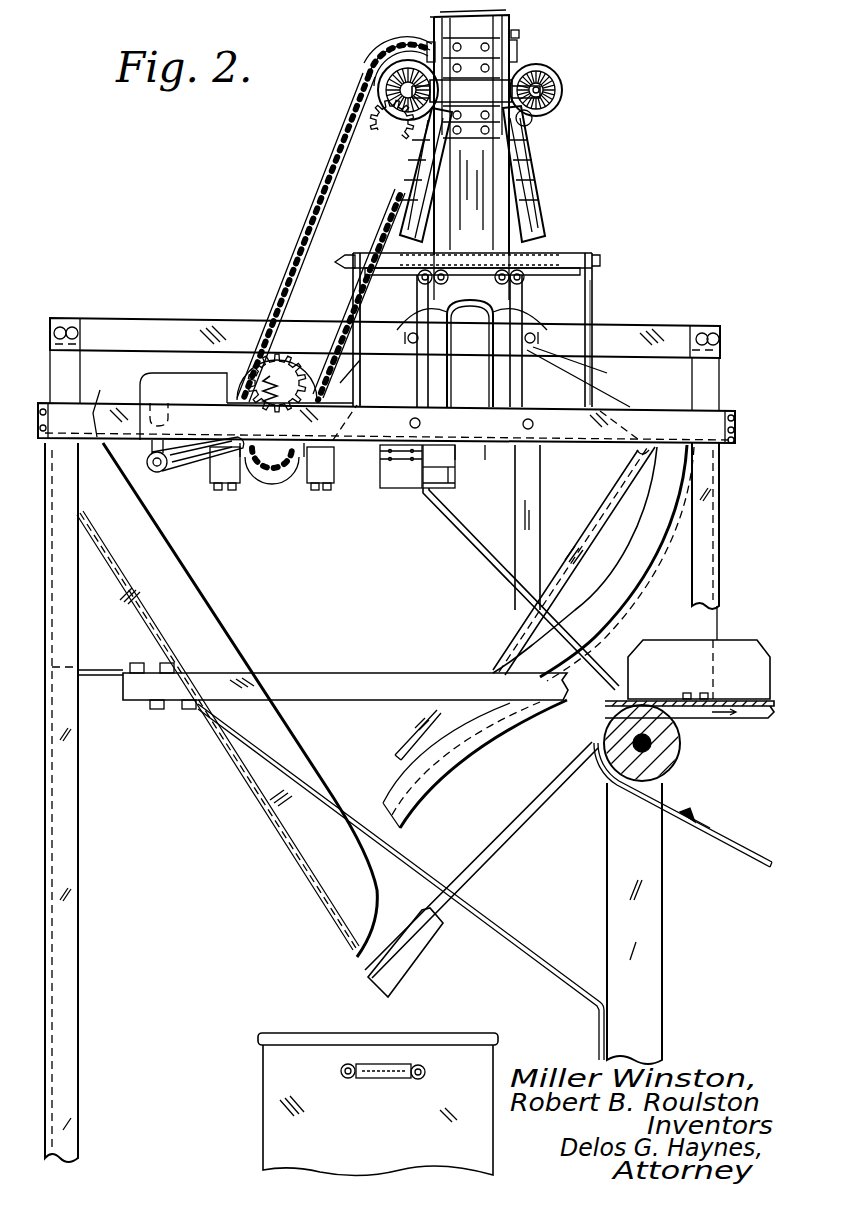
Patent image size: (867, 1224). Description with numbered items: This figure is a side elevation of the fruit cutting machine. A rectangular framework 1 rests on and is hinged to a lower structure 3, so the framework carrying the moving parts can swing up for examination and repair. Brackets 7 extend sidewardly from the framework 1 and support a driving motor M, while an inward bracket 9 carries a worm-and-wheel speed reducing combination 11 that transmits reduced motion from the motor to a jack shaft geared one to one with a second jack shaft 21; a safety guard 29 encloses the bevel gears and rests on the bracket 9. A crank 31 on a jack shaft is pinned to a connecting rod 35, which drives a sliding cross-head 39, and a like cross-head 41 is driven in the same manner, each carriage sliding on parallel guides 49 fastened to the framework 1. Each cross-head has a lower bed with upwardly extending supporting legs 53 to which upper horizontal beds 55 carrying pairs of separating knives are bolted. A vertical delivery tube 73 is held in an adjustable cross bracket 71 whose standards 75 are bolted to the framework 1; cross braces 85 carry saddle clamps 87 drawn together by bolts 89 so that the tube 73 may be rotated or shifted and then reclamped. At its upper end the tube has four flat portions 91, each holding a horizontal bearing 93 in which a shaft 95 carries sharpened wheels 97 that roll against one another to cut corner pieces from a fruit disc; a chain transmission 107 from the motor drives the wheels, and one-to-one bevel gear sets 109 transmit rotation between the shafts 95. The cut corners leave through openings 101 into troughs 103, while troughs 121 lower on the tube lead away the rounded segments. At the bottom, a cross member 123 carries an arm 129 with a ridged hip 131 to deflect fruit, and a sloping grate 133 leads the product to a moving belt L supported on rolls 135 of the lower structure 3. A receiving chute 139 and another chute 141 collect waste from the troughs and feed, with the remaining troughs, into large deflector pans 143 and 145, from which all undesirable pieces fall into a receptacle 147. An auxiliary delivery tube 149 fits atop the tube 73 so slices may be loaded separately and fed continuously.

The rectangular framework 1 is at (75, 405).
The lower structure 3 is at (62, 866).
The brackets 7 is at (220, 470).
The inward bracket 9 is at (103, 401).
The worm-and-wheel speed reducing combination 11 is at (265, 404).
The second jack shaft 21 is at (142, 374).
The safety guard 29 is at (173, 378).
The crank 31 is at (148, 454).
The connecting rod 35 is at (172, 474).
The cross-head 39 is at (378, 258).
The cross-head 41 is at (533, 262).
The guides 49 is at (409, 423).
The supporting legs 53 is at (352, 280).
The upper horizontal beds 55 is at (463, 262).
The adjustable cross bracket 71 is at (110, 325).
The vertical delivery tube 73 is at (478, 172).
The standards 75 is at (55, 372).
The cross braces 85 is at (674, 335).
The saddle clamps 87 is at (585, 361).
The bolts 89 is at (408, 338).
The flat portions 91 is at (428, 50).
The horizontal bearing 93 is at (505, 74).
The shaft 95 is at (392, 90).
The sharpened wheels 97 is at (556, 96).
The openings 101 is at (400, 122).
The troughs 103 is at (415, 178).
The chain transmission 107 is at (308, 192).
The bevel gear sets 109 is at (385, 97).
The troughs 121 is at (631, 390).
The cross member 123 is at (400, 470).
The arm 129 is at (458, 463).
The ridged hip 131 is at (447, 486).
The sloping grate 133 is at (492, 572).
The rolls 135 is at (682, 740).
The receiving chute 139 is at (617, 603).
The chute 141 is at (487, 654).
The deflector pan 143 is at (514, 842).
The deflector pan 145 is at (322, 873).
The receptacle 147 is at (290, 1131).
The auxiliary delivery tube 149 is at (432, 23).
The driving motor M is at (278, 356).
The moving belt L is at (690, 808).